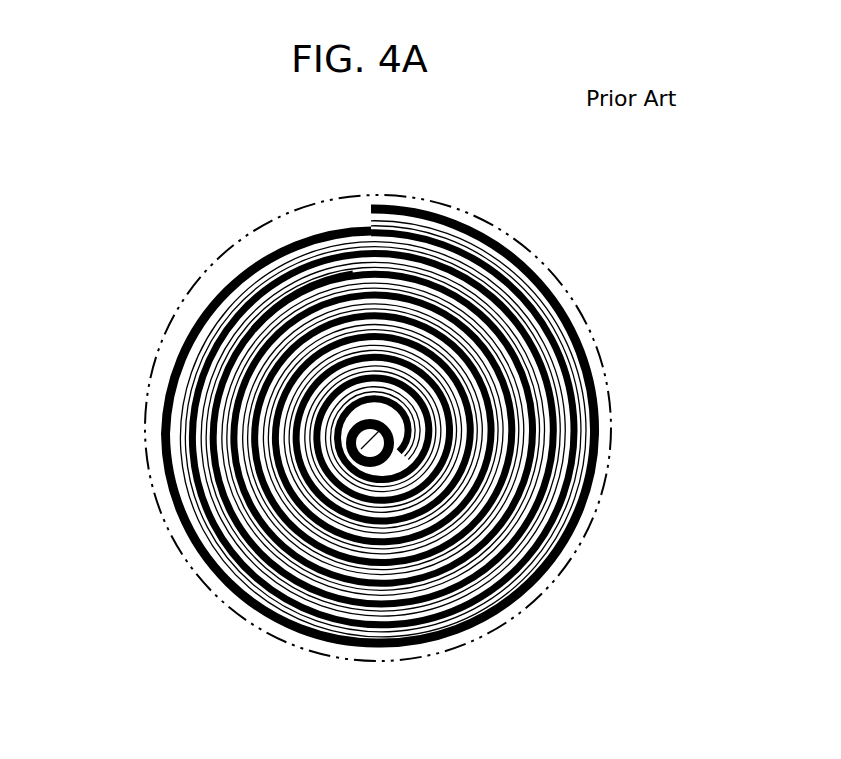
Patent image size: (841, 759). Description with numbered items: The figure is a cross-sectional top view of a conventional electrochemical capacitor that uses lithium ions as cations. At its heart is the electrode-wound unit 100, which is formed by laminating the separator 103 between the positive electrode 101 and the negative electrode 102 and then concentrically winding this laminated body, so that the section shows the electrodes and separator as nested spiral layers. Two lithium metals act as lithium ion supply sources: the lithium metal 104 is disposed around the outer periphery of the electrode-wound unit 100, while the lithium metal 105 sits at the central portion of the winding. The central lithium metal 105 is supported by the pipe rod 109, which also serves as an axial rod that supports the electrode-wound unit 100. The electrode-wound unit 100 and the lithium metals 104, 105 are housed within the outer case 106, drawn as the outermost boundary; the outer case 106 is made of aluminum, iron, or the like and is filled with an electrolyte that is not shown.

The electrode-wound unit 100 is at (440, 188).
The positive electrode 101 is at (463, 262).
The negative electrode 102 is at (566, 400).
The separator 103 is at (283, 291).
The lithium metal 104 is at (215, 280).
The lithium metal 105 is at (352, 441).
The outer case 106 is at (494, 612).
The pipe rod 109 is at (388, 446).